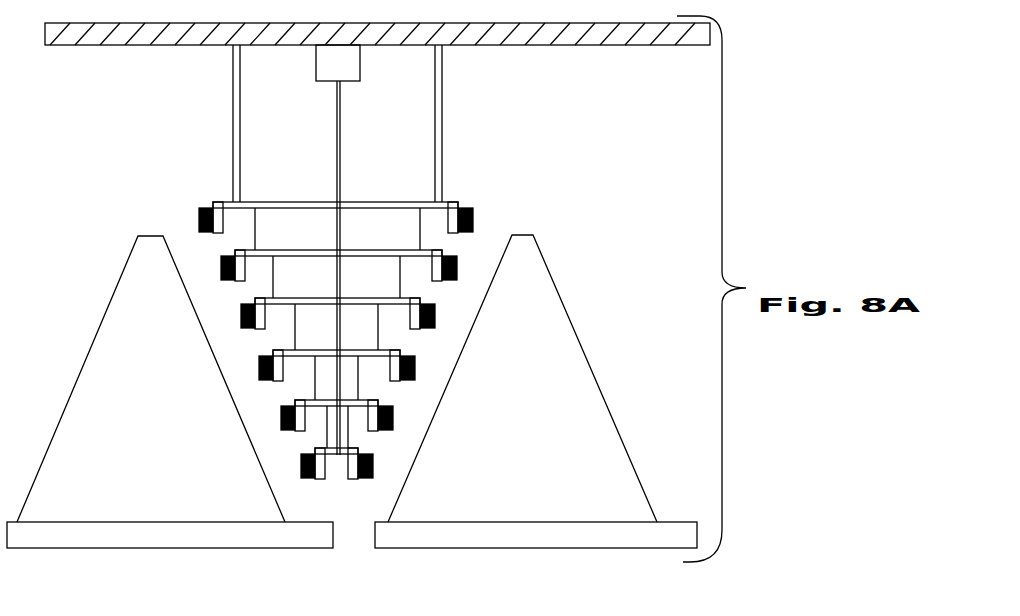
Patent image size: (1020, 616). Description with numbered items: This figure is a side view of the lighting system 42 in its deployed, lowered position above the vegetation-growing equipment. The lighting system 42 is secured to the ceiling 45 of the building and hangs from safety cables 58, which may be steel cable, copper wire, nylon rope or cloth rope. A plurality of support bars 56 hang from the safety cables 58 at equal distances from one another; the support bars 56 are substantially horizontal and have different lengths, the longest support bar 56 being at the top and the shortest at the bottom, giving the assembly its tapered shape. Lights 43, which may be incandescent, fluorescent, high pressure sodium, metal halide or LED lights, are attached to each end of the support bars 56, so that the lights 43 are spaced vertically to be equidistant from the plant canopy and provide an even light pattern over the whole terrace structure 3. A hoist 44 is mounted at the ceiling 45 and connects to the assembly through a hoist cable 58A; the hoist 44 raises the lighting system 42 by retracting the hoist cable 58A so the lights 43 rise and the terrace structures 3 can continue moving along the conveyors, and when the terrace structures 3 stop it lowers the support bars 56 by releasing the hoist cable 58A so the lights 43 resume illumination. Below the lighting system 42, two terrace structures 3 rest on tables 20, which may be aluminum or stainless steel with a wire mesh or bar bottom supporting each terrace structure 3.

The terrace structure 3 is at (127, 262).
The table 20 is at (155, 538).
The lighting system 42 is at (185, 200).
The light 43 is at (473, 215).
The hoist 44 is at (348, 74).
The ceiling 45 is at (675, 47).
The support bar 56 is at (395, 210).
The safety cable 58 is at (442, 128).
The hoist cable 58A is at (341, 152).